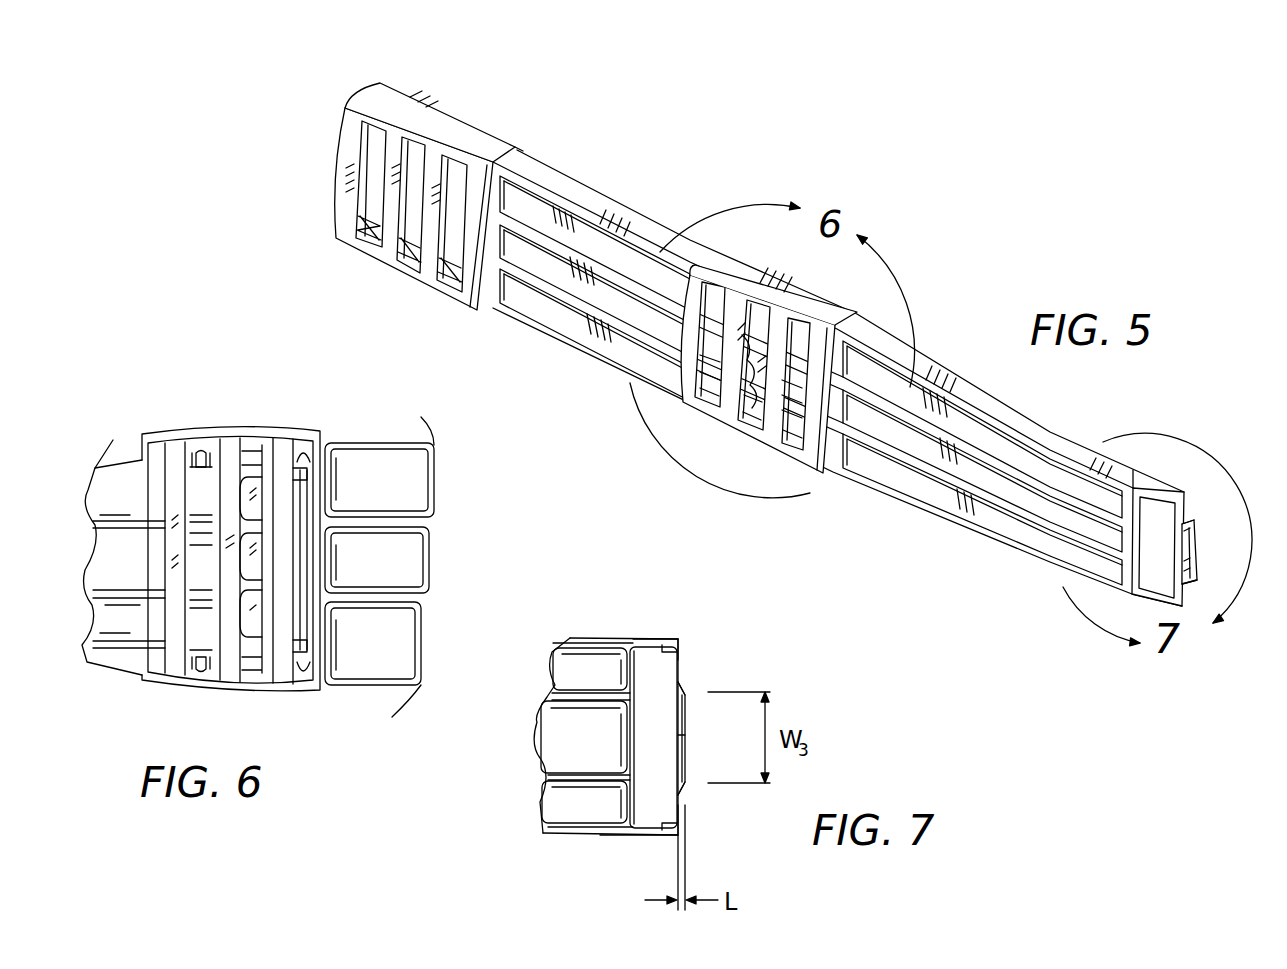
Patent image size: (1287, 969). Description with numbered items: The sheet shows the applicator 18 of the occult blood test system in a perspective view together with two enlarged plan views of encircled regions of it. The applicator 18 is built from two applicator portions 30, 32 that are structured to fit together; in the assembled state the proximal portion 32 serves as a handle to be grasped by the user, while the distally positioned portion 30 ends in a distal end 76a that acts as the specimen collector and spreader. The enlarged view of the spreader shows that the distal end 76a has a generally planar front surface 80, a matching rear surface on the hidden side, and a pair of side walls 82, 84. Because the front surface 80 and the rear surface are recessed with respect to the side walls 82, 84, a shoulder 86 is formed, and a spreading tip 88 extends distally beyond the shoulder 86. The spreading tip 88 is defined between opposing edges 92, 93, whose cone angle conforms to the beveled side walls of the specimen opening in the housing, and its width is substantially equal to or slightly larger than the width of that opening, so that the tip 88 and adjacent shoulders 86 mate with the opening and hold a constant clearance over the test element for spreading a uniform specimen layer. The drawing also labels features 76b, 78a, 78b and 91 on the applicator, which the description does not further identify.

In FIG. 5, the applicator 18 is at (937, 345).
In FIG. 6, the applicator portion 30 is at (363, 647).
In FIG. 5, the applicator portion 32 is at (574, 236).
In FIG. 6, the applicator portion 32 is at (127, 623).
In FIG. 5, the distal end 76a is at (1080, 550).
In FIG. 7, the distal end 76a is at (610, 637).
In FIG. 5, the rib 76b is at (748, 345).
In FIG. 6, the rib 76b is at (197, 500).
In FIG. 5, the buckle block 78a is at (810, 458).
In FIG. 6, the buckle block 78a is at (363, 477).
In FIG. 5, the end block 78b is at (430, 122).
In FIG. 7, the front surface 80 is at (652, 778).
In FIG. 7, the side wall 82 is at (660, 640).
In FIG. 7, the side wall 84 is at (643, 835).
In FIG. 7, the shoulder 86 is at (678, 647).
In FIG. 5, the spreading tip 88 is at (1196, 547).
In FIG. 7, the spreading tip 88 is at (690, 773).
In FIG. 7, the centerline 91 is at (678, 740).
In FIG. 5, the opposing edge 92 is at (1186, 521).
In FIG. 7, the opposing edge 92 is at (687, 687).
In FIG. 7, the opposing edge 93 is at (683, 792).